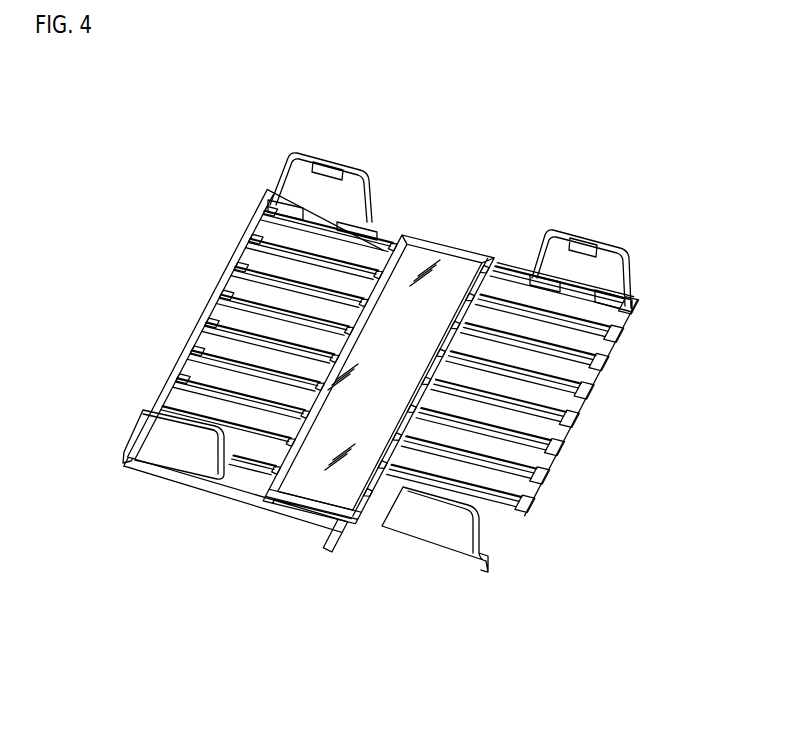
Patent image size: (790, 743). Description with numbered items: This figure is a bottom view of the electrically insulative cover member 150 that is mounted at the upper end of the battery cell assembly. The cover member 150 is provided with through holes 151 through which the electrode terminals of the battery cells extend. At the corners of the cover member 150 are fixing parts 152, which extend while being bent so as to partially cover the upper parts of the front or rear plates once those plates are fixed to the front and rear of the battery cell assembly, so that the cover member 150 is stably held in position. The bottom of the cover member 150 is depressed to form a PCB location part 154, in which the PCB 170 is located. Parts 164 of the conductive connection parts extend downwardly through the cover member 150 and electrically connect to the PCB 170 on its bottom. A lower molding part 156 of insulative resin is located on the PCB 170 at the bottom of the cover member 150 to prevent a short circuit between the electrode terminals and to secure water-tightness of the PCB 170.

The cover member 150 is at (212, 300).
The through holes 151 is at (575, 376).
The fixing parts 152 is at (293, 175).
The PCB location part 154 is at (477, 272).
The lower molding part 156 is at (313, 485).
The parts of the conductive connection parts 164 is at (390, 346).
The PCB 170 is at (455, 280).